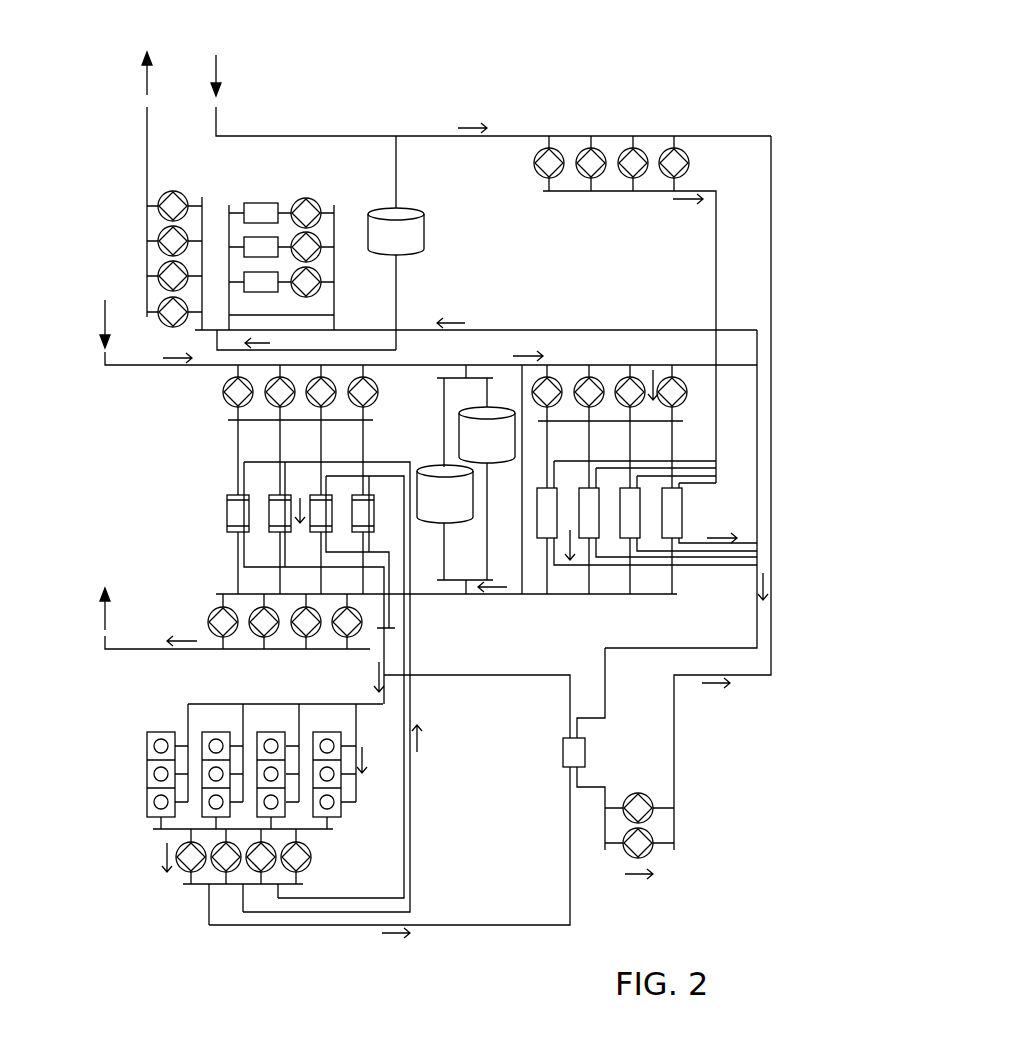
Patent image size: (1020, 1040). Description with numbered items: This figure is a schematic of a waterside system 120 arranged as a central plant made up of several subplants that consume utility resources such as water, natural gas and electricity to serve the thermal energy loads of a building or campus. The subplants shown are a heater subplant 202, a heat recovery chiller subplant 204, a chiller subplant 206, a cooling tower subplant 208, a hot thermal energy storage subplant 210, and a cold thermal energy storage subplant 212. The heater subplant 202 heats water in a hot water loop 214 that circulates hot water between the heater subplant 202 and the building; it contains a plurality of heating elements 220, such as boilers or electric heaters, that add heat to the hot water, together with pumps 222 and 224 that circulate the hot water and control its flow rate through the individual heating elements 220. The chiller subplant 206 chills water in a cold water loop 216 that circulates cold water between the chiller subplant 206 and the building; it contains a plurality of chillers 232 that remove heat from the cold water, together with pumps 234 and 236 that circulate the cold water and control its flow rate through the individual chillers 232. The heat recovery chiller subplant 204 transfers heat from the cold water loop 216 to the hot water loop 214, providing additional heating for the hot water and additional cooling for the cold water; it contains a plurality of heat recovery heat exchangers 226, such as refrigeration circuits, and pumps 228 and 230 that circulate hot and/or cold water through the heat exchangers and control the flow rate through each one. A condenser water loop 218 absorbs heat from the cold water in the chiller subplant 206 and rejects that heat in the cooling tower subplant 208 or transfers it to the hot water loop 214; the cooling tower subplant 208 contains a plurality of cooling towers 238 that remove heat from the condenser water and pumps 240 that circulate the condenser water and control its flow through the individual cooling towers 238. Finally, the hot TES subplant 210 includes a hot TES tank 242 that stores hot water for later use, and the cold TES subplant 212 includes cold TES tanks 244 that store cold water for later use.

The waterside system 120 is at (412, 493).
The heater subplant 202 is at (479, 281).
The heat recovery chiller subplant 204 is at (650, 489).
The chiller subplant 206 is at (365, 534).
The cooling tower subplant 208 is at (224, 814).
The hot thermal energy storage subplant 210 is at (439, 243).
The cold thermal energy storage subplant 212 is at (462, 479).
The hot water loop 214 is at (419, 177).
The cold water loop 216 is at (408, 500).
The condenser water loop 218 is at (545, 930).
The heating elements 220 is at (250, 203).
The pumps 222 is at (184, 193).
The pumps 224 is at (312, 198).
The heat recovery heat exchangers 226 is at (684, 511).
The pumps 228 is at (683, 381).
The pumps 230 is at (688, 164).
The chillers 232 is at (224, 505).
The pumps 234 is at (206, 613).
The pumps 236 is at (222, 388).
The cooling towers 238 is at (343, 809).
The pumps 240 is at (311, 858).
The hot TES tank 242 is at (423, 218).
The cold TES tanks 244 is at (474, 410).